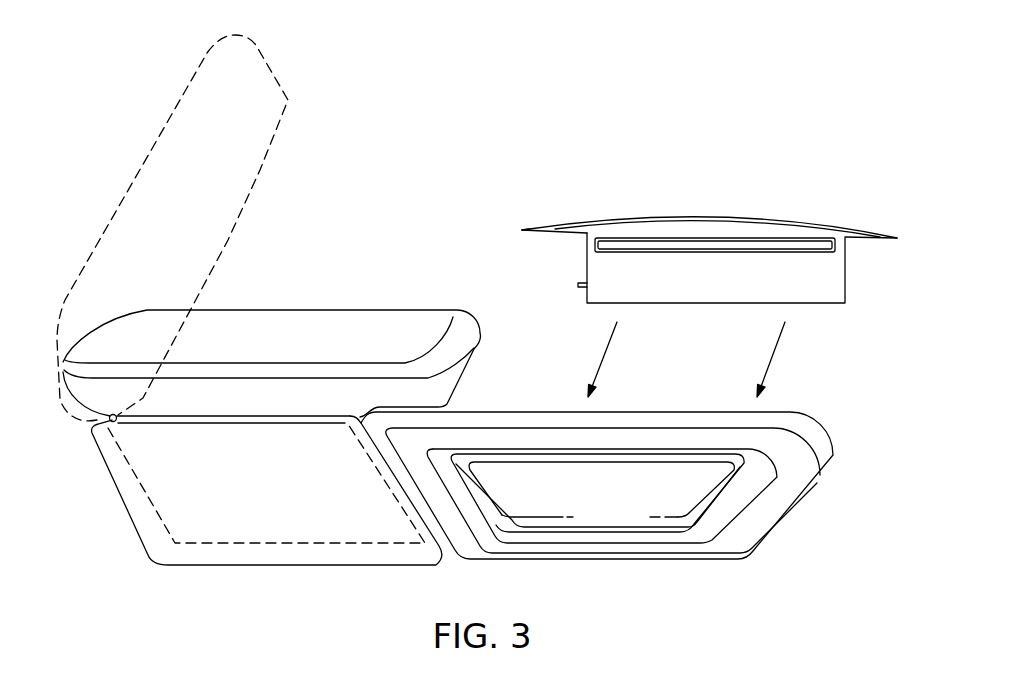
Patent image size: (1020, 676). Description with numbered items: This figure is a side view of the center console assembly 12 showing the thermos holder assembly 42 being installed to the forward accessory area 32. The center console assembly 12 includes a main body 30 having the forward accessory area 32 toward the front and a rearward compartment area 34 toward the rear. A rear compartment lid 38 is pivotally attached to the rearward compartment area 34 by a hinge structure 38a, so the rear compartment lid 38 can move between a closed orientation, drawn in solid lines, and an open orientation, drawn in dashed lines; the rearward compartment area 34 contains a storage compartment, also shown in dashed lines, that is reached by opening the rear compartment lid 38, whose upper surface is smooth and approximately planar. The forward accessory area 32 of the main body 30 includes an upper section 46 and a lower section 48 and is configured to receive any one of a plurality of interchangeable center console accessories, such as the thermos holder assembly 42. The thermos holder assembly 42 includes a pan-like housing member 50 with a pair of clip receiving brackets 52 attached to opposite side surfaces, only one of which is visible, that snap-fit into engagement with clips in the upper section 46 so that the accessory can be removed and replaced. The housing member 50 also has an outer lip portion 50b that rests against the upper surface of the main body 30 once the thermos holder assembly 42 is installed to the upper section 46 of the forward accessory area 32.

The center console assembly 12 is at (672, 118).
The main body 30 is at (826, 434).
The forward accessory area 32 is at (681, 483).
The rearward compartment area 34 is at (275, 518).
The rear compartment lid 38 is at (213, 98).
The hinge structure 38a is at (118, 421).
The thermos holder assembly 42 is at (783, 212).
The upper section 46 is at (670, 440).
The lower section 48 is at (607, 500).
The housing member 50 is at (847, 275).
The outer lip portion 50b is at (558, 226).
The clip receiving bracket 52 is at (730, 253).